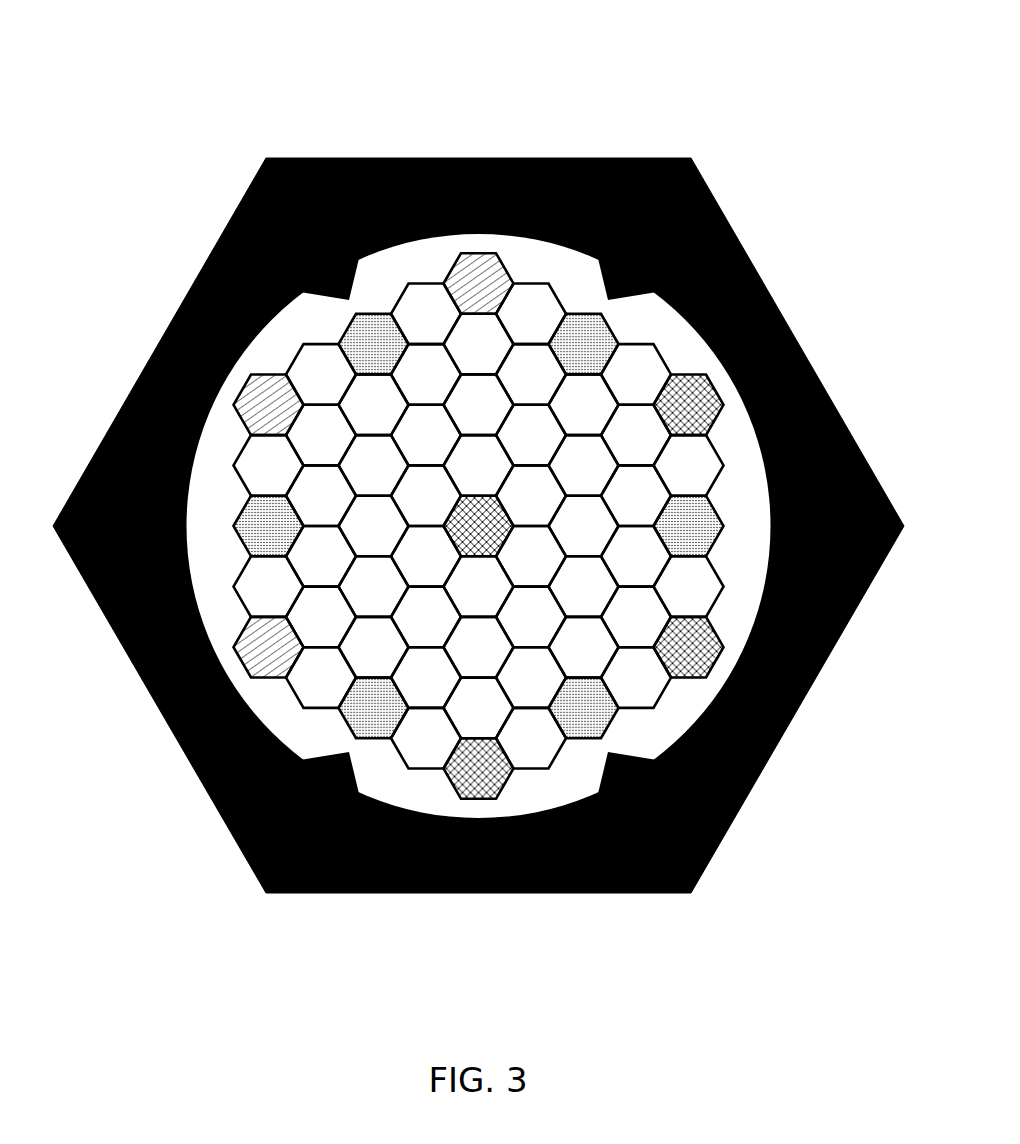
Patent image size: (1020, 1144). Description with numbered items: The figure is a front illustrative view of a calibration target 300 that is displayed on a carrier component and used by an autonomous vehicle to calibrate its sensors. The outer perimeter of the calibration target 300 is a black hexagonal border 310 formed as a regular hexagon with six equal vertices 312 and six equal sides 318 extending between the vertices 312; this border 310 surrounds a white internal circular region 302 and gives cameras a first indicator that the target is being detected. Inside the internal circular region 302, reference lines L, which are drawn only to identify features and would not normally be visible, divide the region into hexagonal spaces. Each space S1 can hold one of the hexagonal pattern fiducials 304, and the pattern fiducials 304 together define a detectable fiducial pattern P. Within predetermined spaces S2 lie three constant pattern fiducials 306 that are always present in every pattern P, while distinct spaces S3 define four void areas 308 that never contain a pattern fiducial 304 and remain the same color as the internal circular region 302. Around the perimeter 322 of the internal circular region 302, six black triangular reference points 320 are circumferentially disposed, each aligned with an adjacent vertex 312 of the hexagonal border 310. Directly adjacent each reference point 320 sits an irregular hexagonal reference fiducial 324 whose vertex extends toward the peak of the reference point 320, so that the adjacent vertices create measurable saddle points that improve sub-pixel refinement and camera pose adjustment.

The calibration target 300 is at (463, 70).
The internal circular region 302 is at (742, 440).
The pattern fiducials 304 is at (306, 385).
The constant pattern fiducials 306 is at (458, 270).
The void areas 308 is at (478, 785).
The hexagonal border 310 is at (557, 158).
The vertices 312 is at (262, 157).
The sides 318 is at (477, 155).
The reference points 320 is at (194, 522).
The perimeter 322 is at (567, 255).
The reference fiducials 324 is at (252, 540).
The fiducial pattern P is at (405, 258).
The reference lines L is at (317, 345).
The space S1 is at (296, 350).
The predetermined spaces S2 is at (485, 250).
The distinct spaces S3 is at (722, 638).